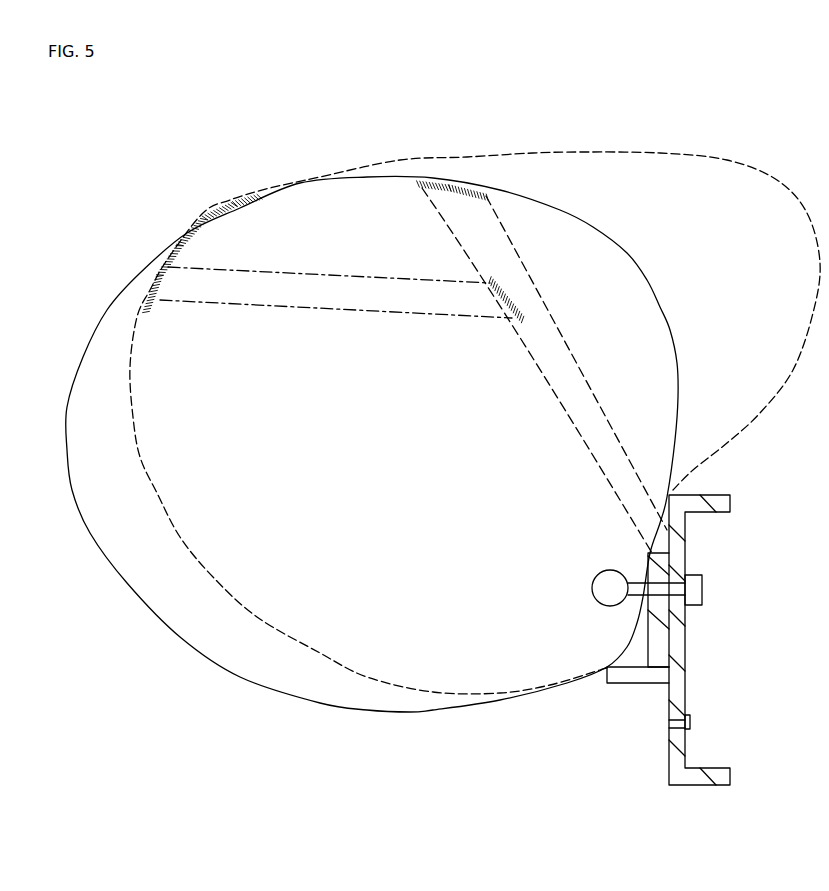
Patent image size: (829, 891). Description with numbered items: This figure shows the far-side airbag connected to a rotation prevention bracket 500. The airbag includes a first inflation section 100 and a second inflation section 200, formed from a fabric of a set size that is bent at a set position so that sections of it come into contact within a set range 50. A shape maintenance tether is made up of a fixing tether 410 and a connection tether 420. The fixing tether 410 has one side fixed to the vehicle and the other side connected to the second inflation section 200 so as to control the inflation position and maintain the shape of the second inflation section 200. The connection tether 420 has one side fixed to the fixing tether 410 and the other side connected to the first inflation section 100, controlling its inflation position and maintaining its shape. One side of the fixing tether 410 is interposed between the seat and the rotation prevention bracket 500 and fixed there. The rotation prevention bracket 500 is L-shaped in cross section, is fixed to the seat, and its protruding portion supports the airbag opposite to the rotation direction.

The set range 50 is at (207, 215).
The first inflation section 100 is at (407, 713).
The second inflation section 200 is at (388, 228).
The fixing tether 410 is at (492, 262).
The connection tether 420 is at (365, 296).
The rotation prevention bracket 500 is at (627, 686).